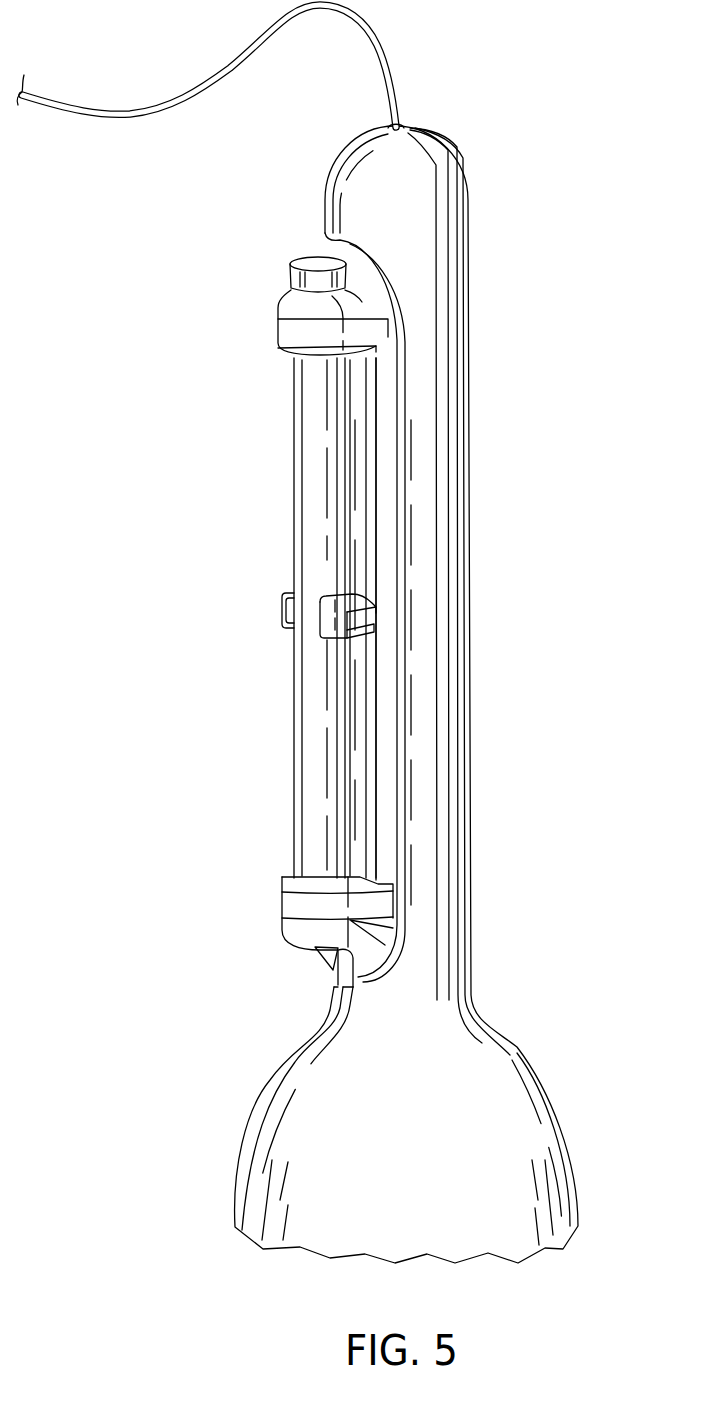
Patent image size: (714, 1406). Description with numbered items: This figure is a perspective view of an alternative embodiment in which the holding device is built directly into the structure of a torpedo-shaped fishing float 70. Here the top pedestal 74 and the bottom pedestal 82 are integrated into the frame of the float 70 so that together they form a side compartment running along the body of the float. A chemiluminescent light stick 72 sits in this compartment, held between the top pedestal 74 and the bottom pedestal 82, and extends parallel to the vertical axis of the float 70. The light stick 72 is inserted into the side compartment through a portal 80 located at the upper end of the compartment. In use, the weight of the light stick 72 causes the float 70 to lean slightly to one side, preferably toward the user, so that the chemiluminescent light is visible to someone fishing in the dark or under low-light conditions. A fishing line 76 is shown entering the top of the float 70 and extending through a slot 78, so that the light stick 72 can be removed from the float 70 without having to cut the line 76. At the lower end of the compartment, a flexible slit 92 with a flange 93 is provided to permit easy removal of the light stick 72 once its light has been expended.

The fishing float 70 is at (468, 478).
The chemiluminescent light stick 72 is at (297, 478).
The top pedestal 74 is at (278, 333).
The fishing line 76 is at (197, 95).
The slot 78 is at (400, 122).
The portal 80 is at (322, 251).
The bottom pedestal 82 is at (283, 893).
The flexible slit 92 is at (341, 979).
The flange 93 is at (326, 963).